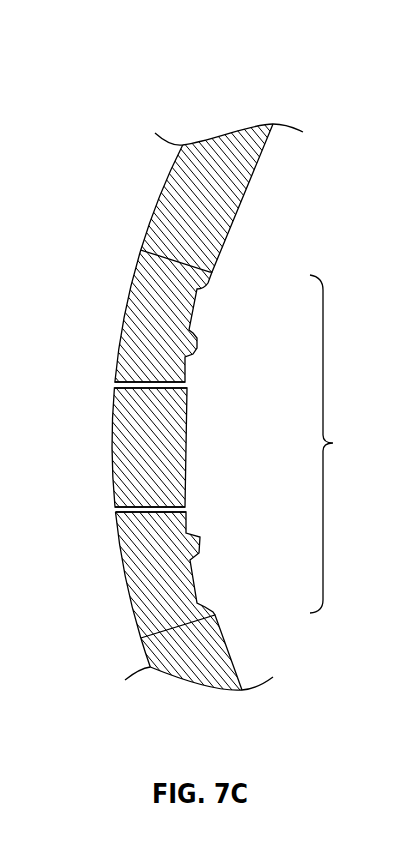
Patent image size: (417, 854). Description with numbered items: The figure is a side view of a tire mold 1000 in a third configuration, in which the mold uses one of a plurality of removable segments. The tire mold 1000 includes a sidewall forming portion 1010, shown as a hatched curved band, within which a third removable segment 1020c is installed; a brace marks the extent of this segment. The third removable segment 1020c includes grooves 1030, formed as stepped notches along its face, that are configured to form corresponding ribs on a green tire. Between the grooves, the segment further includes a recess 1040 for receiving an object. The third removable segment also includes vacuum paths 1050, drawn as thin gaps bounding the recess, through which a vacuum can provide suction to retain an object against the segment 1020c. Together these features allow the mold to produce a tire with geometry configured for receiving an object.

The tire mold 1000 is at (189, 55).
The sidewall forming portion 1010 is at (238, 173).
The third removable segment 1020c is at (360, 444).
The grooves 1030 is at (192, 308).
The recess 1040 is at (187, 445).
The vacuum paths 1050 is at (115, 385).